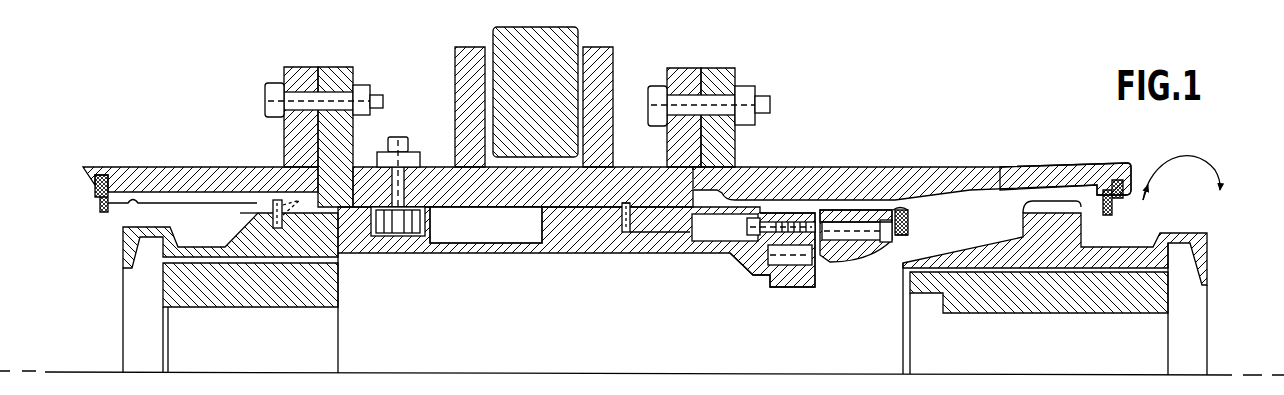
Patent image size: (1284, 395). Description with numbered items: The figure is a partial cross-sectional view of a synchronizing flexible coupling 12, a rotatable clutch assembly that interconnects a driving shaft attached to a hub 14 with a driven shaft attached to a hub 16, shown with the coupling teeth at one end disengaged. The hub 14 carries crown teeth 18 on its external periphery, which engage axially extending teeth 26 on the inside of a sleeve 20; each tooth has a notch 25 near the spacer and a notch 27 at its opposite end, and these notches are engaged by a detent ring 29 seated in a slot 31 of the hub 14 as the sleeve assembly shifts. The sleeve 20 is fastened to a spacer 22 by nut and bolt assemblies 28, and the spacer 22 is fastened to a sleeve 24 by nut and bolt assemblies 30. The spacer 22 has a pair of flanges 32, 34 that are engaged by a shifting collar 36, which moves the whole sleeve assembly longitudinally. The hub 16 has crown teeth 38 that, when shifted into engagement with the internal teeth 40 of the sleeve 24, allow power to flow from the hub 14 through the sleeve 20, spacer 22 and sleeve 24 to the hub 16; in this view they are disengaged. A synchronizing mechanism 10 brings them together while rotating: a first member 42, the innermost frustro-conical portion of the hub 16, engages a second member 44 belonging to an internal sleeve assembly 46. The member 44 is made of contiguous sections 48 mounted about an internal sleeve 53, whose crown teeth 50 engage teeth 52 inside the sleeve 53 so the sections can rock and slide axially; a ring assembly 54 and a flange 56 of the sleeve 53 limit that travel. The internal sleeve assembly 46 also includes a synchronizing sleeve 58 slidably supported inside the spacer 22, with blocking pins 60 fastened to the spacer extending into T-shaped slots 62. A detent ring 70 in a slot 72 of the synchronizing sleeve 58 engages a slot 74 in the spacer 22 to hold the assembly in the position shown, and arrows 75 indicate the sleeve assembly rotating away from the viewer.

The synchronizing mechanism 10 is at (884, 316).
The synchronizing flexible coupling 12 is at (931, 104).
The hub 14 is at (342, 290).
The hub 16 is at (1052, 313).
The crown teeth 18 is at (330, 191).
The sleeve 20 is at (152, 167).
The spacer 22 is at (454, 120).
The sleeve 24 is at (1025, 165).
The notch 25 is at (270, 201).
The teeth 26 is at (190, 203).
The notch 27 is at (110, 207).
The nut and bolt assemblies 28 is at (278, 77).
The detent ring 29 is at (276, 201).
The nut and bolt assemblies 30 is at (750, 80).
The slot 31 is at (275, 230).
The flange 32 is at (455, 60).
The flange 34 is at (614, 62).
The shifting collar 36 is at (580, 40).
The crown teeth 38 is at (1028, 203).
The teeth 40 is at (868, 196).
The first member 42 is at (980, 252).
The second member 44 is at (866, 263).
The internal sleeve assembly 46 is at (766, 287).
The sections 48 is at (862, 247).
The crown teeth 50 is at (822, 212).
The teeth 52 is at (900, 210).
The internal sleeve 53 is at (920, 213).
The ring assembly 54 is at (910, 230).
The flange 56 is at (815, 287).
The synchronizing sleeve 58 is at (522, 254).
The blocking pins 60 is at (422, 222).
The T-shaped slots 62 is at (466, 244).
The detent ring 70 is at (632, 220).
The slot 72 is at (624, 233).
The slot 74 is at (627, 203).
The arrows 75 is at (1158, 178).